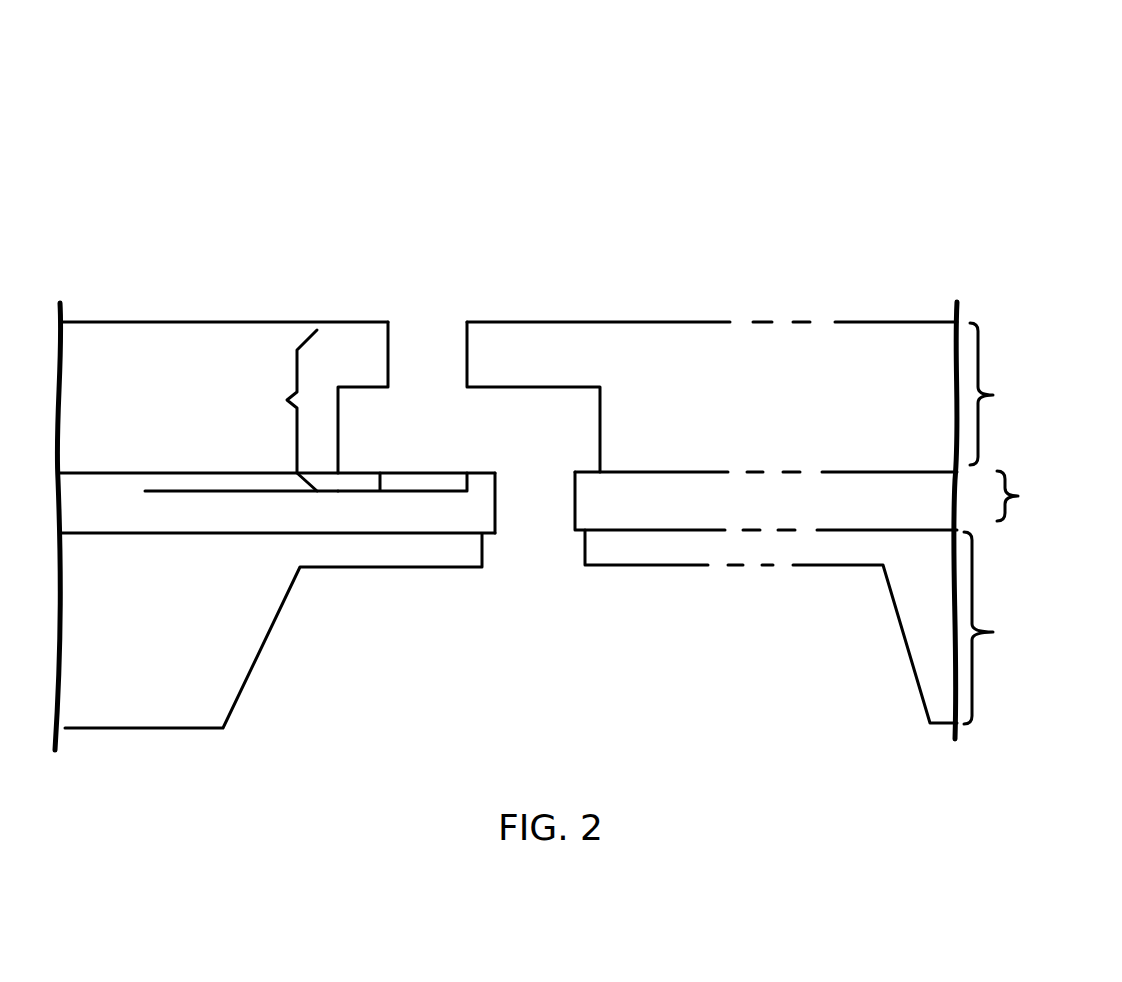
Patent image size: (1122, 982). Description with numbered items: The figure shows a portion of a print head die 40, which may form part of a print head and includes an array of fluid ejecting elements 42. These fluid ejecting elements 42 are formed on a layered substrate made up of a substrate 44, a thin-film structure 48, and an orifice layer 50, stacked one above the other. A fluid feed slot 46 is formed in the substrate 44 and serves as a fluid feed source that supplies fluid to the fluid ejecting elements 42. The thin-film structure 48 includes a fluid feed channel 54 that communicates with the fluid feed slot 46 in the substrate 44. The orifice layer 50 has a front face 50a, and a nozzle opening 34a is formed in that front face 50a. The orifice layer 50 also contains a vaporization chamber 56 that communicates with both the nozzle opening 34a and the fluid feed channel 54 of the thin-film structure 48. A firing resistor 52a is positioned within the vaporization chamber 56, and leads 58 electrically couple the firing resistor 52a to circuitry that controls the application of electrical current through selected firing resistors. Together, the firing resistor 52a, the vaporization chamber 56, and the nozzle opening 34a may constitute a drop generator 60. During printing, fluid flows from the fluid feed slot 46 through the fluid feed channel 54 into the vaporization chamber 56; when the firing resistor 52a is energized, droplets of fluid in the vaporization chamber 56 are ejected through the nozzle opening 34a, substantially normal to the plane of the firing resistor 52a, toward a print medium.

The print head die 40 is at (775, 414).
The fluid ejecting element 42 is at (383, 448).
The nozzle opening 34a is at (431, 317).
The front face 50a is at (248, 322).
The orifice layer 50 is at (761, 397).
The thin-film structure 48 is at (829, 500).
The substrate 44 is at (820, 627).
The fluid feed slot 46 is at (462, 647).
The fluid feed channel 54 is at (527, 507).
The vaporization chamber 56 is at (492, 448).
The firing resistor 52a is at (432, 480).
The leads 58 is at (225, 492).
The drop generator 60 is at (269, 410).